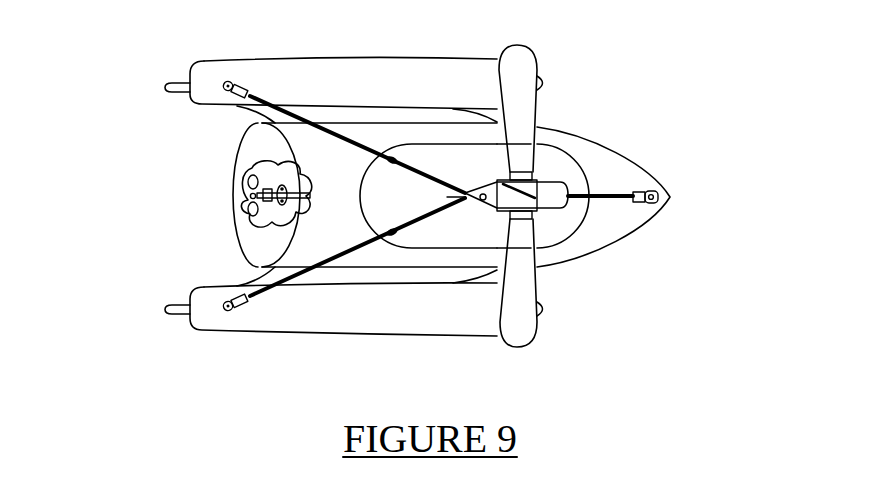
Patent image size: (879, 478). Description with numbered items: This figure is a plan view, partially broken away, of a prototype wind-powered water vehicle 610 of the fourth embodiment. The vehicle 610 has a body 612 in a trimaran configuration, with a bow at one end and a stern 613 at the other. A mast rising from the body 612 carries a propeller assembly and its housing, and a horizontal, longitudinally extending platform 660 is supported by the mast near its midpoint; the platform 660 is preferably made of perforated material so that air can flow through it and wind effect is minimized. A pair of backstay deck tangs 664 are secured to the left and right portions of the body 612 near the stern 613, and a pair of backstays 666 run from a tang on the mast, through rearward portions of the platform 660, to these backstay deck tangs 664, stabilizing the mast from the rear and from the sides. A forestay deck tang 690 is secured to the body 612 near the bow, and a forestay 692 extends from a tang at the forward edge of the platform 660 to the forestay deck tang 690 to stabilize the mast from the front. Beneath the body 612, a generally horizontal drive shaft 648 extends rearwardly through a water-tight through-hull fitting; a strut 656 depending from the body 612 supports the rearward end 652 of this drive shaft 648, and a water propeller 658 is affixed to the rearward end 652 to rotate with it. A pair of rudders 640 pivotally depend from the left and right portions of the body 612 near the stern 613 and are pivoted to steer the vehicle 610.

The wind-powered water vehicle 610 is at (742, 88).
The body 612 is at (627, 237).
The stern 613 is at (176, 199).
The rudders 640 is at (182, 84).
The generally horizontal drive shaft 648 is at (262, 126).
The rearward end 652 is at (250, 177).
The strut 656 is at (264, 161).
The water propeller 658 is at (247, 221).
The platform 660 is at (369, 165).
The backstay deck tangs 664 is at (233, 81).
The backstays 666 is at (258, 291).
The forestay deck tang 690 is at (659, 197).
The forestay 692 is at (605, 191).